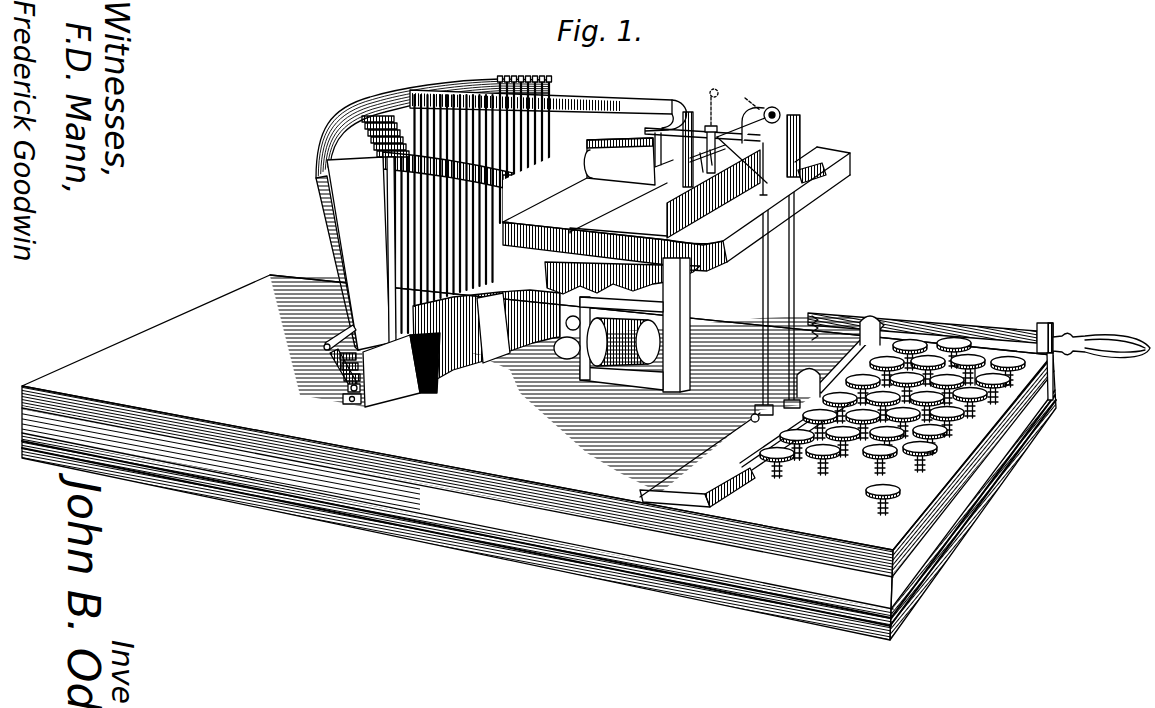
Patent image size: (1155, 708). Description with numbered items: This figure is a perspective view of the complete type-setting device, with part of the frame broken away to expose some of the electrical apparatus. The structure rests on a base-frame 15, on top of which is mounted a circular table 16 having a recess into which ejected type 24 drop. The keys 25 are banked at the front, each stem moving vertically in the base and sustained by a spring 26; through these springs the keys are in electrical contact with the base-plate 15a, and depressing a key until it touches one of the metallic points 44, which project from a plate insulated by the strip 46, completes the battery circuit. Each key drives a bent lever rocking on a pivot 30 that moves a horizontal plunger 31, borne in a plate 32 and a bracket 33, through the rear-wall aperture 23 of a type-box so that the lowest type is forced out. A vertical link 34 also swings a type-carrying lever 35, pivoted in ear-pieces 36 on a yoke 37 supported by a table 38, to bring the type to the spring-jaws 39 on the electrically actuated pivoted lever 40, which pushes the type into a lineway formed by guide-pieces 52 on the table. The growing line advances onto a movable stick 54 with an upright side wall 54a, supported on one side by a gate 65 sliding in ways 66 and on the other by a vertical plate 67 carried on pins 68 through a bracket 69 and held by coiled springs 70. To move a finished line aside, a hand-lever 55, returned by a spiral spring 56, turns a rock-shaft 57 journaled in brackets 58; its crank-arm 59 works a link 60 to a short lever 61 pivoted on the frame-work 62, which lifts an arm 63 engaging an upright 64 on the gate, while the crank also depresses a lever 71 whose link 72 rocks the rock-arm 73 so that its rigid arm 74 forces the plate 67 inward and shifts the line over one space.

The base-frame 15 is at (539, 457).
The base-plate 15a is at (747, 454).
The circular table 16 is at (556, 325).
The aperture in rear wall 23 is at (348, 372).
The type 24 is at (401, 370).
The keys 25 is at (903, 470).
The spring 26 is at (799, 472).
The pivot 30 is at (356, 400).
The plunger 31 is at (331, 357).
The plate 32 is at (388, 331).
The bracket 33 is at (340, 340).
The vertically-working link 34 is at (394, 258).
The type-carrying lever 35 is at (420, 276).
The ear-pieces 36 is at (512, 72).
The yoke 37 is at (585, 115).
The table 38 is at (676, 205).
The spring-jaws 39 is at (573, 164).
The pivoted lever 40 is at (594, 306).
The metallic points 44 is at (608, 362).
The insulating strip 46 is at (566, 324).
The guide-pieces 52 is at (621, 161).
The movable stick 54 is at (664, 192).
The upright side wall 54a is at (618, 227).
The hand-lever 55 is at (962, 331).
The spiral spring 56 is at (814, 316).
The rock-shaft 57 is at (836, 376).
The brackets 58 is at (871, 346).
The crank-arm 59 is at (753, 421).
The link 60 is at (796, 262).
The short lever 61 is at (771, 106).
The frame-work 62 is at (800, 131).
The arm 63 is at (741, 111).
The upright 64 is at (716, 106).
The gate 65 is at (707, 172).
The ways 66 is at (688, 112).
The vertical plate 67 is at (710, 153).
The pins 68 is at (700, 160).
The bracket 69 is at (656, 158).
The coiled springs 70 is at (700, 156).
The lever 71 is at (774, 442).
The link 72 is at (763, 272).
The rock-arm 73 is at (742, 175).
The rigid arm 74 is at (713, 173).